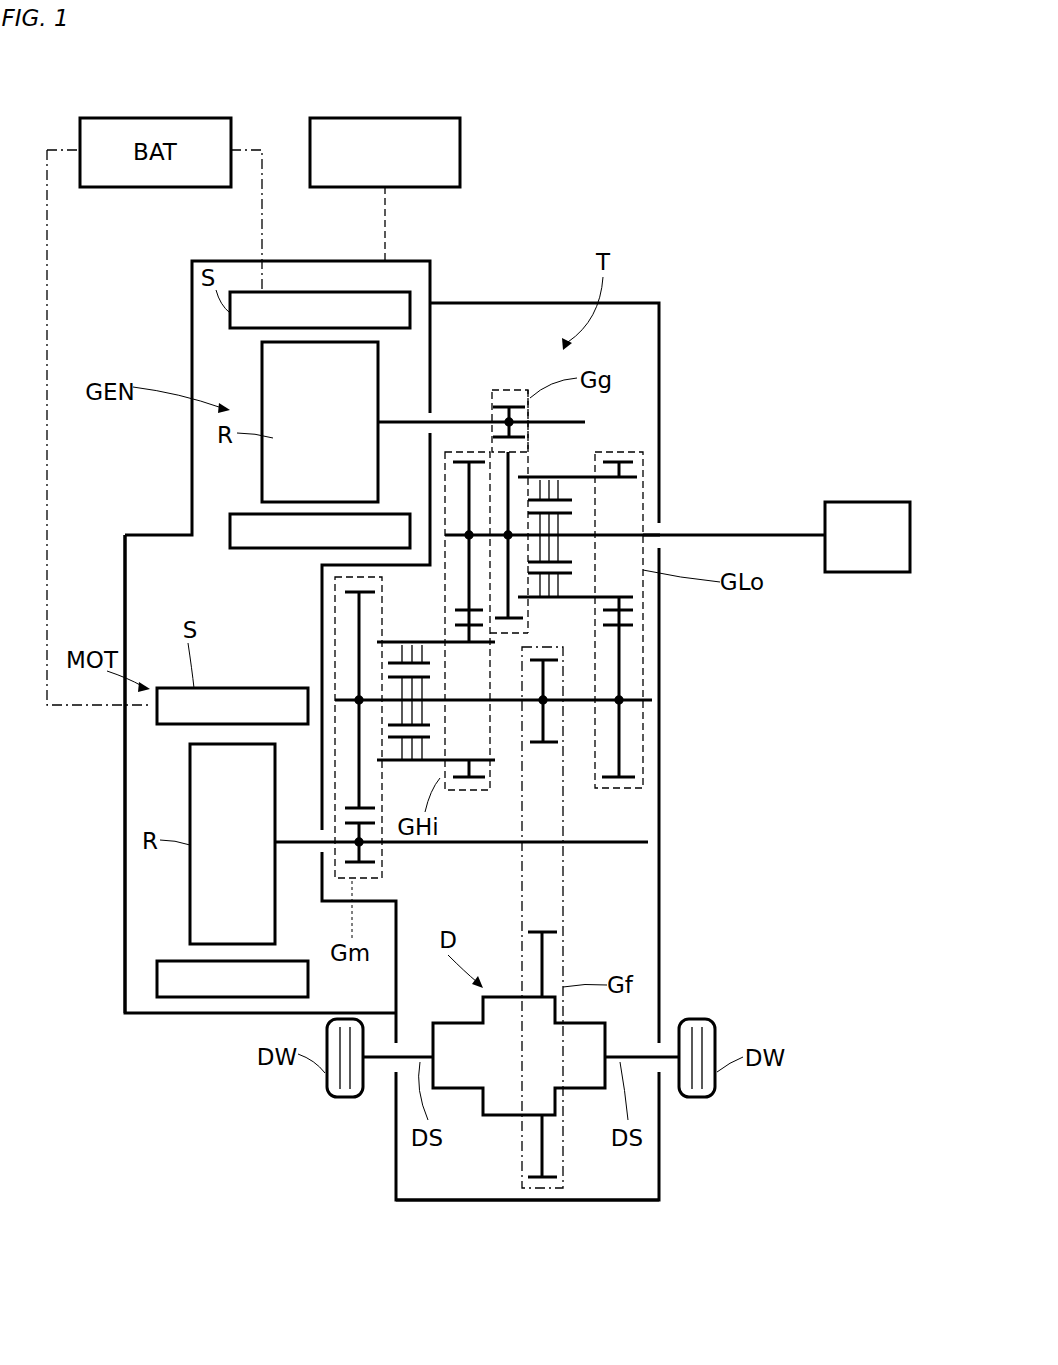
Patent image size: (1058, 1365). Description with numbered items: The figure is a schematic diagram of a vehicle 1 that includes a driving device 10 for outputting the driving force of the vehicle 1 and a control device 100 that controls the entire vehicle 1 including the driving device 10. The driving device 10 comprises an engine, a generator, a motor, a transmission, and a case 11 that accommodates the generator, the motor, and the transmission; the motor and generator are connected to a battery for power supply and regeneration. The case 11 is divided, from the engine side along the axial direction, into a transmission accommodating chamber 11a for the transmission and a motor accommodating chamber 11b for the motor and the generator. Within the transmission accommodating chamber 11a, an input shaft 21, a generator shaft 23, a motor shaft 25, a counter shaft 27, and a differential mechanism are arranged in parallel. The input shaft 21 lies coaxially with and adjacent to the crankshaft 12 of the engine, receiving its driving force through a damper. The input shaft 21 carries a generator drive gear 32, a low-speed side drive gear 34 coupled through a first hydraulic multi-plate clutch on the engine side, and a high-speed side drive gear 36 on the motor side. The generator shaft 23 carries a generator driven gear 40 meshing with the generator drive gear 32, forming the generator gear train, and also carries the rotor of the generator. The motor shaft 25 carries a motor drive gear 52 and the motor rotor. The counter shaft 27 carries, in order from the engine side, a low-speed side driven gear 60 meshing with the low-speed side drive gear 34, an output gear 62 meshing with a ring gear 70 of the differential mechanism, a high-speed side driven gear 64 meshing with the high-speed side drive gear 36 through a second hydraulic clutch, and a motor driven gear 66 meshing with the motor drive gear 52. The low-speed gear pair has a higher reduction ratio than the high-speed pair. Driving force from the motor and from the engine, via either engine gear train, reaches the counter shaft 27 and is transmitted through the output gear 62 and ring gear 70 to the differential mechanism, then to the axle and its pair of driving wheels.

The vehicle 1 is at (586, 140).
The driving device 10 is at (478, 280).
The case 11 is at (659, 337).
The transmission accommodating chamber 11a is at (637, 888).
The motor accommodating chamber 11b is at (167, 567).
The crankshaft 12 is at (760, 535).
The input shaft 21 is at (647, 523).
The generator shaft 23 is at (585, 415).
The motor shaft 25 is at (630, 838).
The counter shaft 27 is at (635, 705).
The generator drive gear 32 is at (528, 467).
The low-speed side drive gear 34 is at (640, 443).
The high-speed side drive gear 36 is at (445, 443).
The generator driven gear 40 is at (503, 388).
The motor drive gear 52 is at (368, 864).
The low-speed side driven gear 60 is at (632, 628).
The output gear 62 is at (553, 660).
The high-speed side driven gear 64 is at (476, 780).
The motor driven gear 66 is at (378, 583).
The ring gear 70 is at (535, 925).
The control device 100 is at (425, 116).